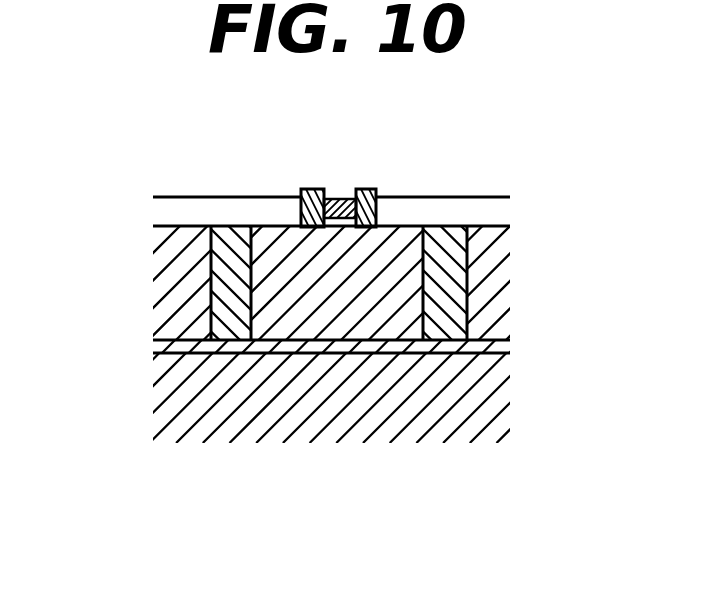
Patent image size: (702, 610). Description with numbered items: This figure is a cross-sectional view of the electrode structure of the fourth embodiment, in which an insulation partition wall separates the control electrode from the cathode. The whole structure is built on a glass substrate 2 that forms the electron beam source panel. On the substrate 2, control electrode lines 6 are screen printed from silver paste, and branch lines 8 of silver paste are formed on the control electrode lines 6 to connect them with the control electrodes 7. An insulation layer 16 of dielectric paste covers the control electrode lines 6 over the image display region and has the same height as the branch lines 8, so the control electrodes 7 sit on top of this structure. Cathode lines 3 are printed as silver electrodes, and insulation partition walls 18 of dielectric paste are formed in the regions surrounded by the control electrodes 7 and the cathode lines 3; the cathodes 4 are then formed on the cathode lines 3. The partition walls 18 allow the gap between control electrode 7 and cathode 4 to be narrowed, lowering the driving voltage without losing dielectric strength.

The substrate 2 is at (500, 393).
The cathode line 3 is at (378, 217).
The cathode 4 is at (335, 199).
The control electrode line 6 is at (497, 349).
The control electrode 7 is at (465, 206).
The branch line 8 is at (447, 290).
The insulation layer 16 is at (168, 285).
The insulation partition wall 18 is at (301, 190).